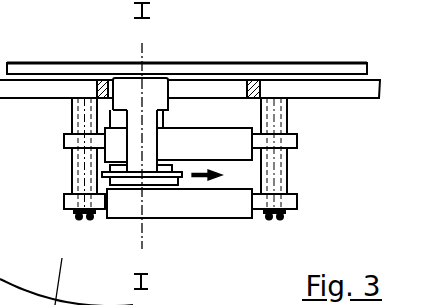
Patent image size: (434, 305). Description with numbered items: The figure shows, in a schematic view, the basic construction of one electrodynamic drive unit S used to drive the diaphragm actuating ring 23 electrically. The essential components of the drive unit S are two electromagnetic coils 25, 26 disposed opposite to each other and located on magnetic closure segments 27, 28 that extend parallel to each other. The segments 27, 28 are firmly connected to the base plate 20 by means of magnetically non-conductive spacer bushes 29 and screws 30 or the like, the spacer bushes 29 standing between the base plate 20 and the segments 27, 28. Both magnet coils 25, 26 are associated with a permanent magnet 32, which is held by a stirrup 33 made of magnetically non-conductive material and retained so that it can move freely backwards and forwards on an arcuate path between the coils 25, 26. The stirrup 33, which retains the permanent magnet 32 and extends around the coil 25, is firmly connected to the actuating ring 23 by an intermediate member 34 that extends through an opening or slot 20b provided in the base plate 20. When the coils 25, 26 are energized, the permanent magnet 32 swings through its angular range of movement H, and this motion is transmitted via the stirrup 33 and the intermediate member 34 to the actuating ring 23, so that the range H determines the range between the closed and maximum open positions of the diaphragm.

The base plate 20 is at (350, 92).
The opening or slot 20b is at (203, 90).
The diaphragm actuating ring 23 is at (271, 70).
The electromagnetic coil 25 is at (199, 138).
The electromagnetic coil 26 is at (193, 206).
The magnetic closure segment 27 is at (287, 144).
The magnetic closure segment 28 is at (286, 204).
The spacer bush 29 is at (78, 117).
The screw 30 is at (72, 214).
The permanent magnet 32 is at (158, 184).
The stirrup 33 is at (150, 142).
The intermediate member 34 is at (137, 88).
The electrodynamic drive unit S is at (316, 62).
The angular range of movement H is at (97, 268).